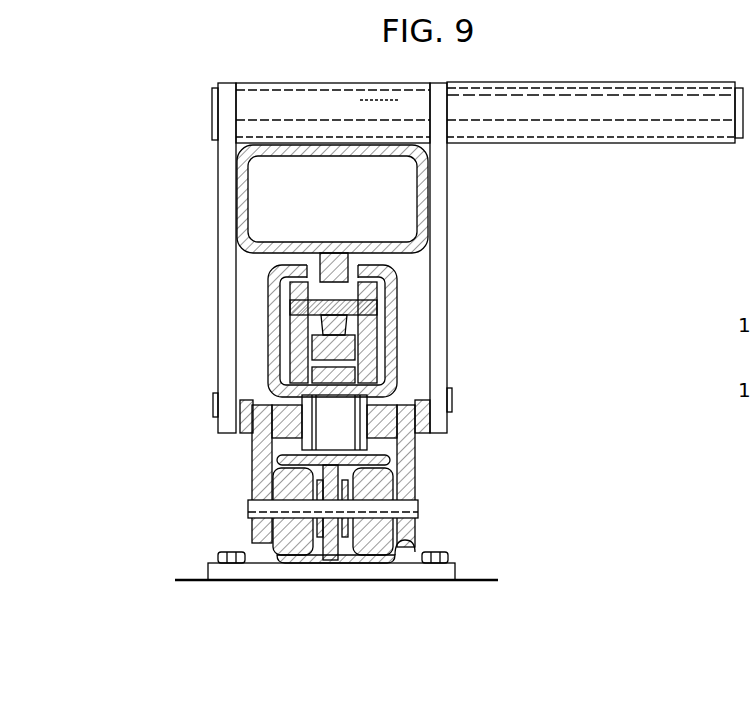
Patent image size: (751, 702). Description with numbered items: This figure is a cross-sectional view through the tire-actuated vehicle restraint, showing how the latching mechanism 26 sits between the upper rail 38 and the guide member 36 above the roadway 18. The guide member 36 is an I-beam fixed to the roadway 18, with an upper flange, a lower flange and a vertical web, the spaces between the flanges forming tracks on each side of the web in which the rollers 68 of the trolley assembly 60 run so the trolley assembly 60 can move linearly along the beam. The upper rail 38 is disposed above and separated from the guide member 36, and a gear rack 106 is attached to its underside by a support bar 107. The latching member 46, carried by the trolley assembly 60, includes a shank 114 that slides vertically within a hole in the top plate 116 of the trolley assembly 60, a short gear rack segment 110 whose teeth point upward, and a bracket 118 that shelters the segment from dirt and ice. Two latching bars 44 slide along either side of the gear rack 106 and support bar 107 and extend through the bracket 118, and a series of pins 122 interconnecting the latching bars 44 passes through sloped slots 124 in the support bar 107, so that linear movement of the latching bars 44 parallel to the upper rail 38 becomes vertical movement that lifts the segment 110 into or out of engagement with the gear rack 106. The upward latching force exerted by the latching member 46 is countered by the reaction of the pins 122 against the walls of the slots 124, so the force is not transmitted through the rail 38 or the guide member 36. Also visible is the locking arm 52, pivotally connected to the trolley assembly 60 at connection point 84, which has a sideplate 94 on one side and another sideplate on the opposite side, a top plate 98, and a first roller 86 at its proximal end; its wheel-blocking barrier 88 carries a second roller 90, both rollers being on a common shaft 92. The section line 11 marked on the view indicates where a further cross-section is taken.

The roadway 18 is at (478, 578).
The latching mechanism 26 is at (490, 222).
The guide member 36 is at (395, 460).
The upper rail 38 is at (270, 156).
The latching bar 44 is at (290, 334).
The latching member 46 is at (396, 298).
The locking arm 52 is at (448, 184).
The trolley assembly 60 is at (248, 490).
The rollers 68 is at (415, 548).
The connection point 84 is at (455, 403).
The first roller 86 is at (272, 83).
The wheel-blocking barrier 88 is at (648, 82).
The second roller 90 is at (580, 82).
The common shaft 92 is at (215, 112).
The sideplate 94 is at (218, 214).
The top plate 98 is at (381, 105).
The gear rack 106 is at (328, 346).
The support bar 107 is at (348, 258).
The gear rack segment 110 is at (325, 376).
The shank 114 is at (352, 424).
The top plate 116 is at (395, 412).
The bracket 118 is at (396, 328).
The pins 122 is at (290, 306).
The sloped slots 124 is at (375, 264).
The section line 11 is at (330, 300).